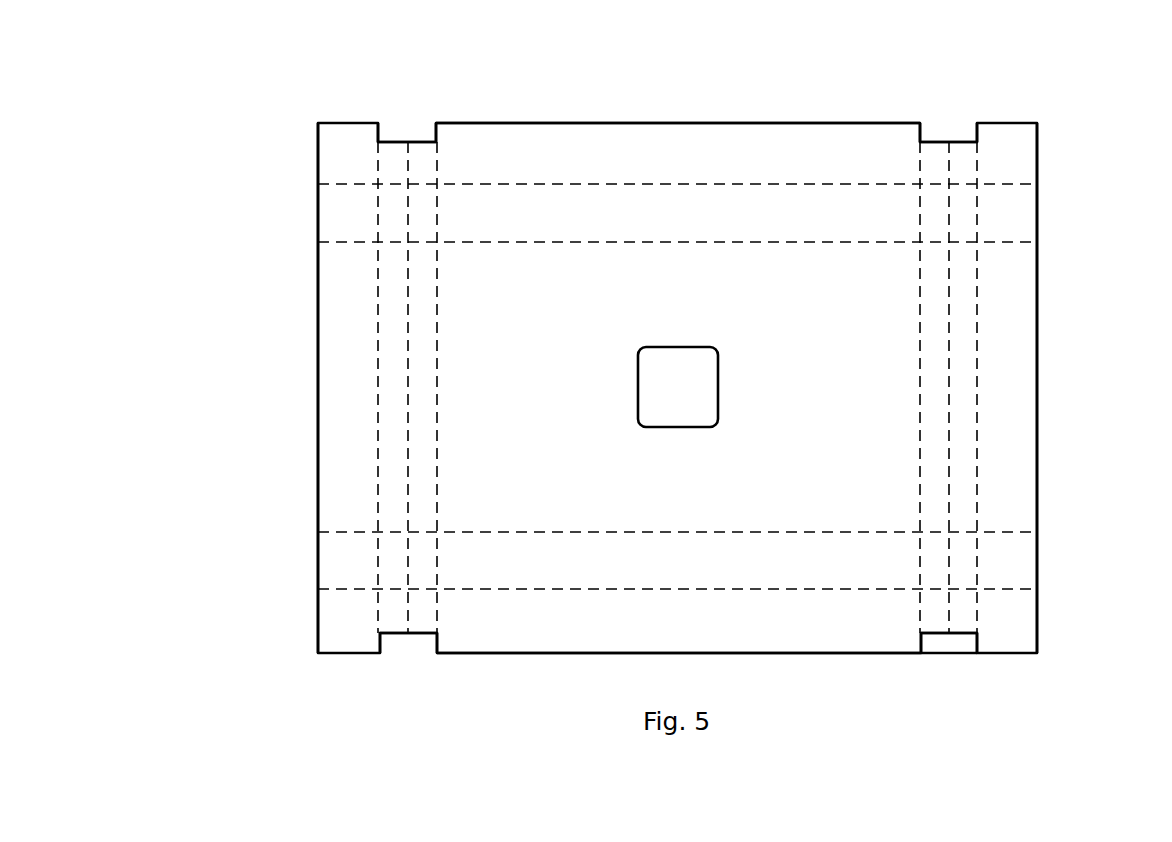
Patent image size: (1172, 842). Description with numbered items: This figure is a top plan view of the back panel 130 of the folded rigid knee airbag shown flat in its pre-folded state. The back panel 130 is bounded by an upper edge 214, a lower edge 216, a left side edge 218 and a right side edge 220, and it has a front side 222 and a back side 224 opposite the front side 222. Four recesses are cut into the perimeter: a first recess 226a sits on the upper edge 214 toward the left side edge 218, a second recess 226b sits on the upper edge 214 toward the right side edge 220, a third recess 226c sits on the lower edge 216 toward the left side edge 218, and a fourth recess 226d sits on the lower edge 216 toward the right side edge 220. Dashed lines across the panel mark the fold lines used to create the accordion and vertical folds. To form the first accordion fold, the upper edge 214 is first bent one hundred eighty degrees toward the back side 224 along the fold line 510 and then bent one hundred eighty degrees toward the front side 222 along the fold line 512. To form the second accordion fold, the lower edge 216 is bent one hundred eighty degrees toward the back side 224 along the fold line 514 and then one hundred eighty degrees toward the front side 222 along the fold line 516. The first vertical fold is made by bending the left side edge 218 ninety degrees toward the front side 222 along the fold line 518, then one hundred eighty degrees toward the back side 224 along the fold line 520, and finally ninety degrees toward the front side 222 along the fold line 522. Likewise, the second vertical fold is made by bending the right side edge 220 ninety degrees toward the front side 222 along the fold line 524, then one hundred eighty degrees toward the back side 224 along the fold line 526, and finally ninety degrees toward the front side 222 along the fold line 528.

The back panel 130 is at (1068, 167).
The upper edge 214 is at (731, 124).
The lower edge 216 is at (790, 655).
The left side edge 218 is at (318, 434).
The right side edge 220 is at (1037, 373).
The front side 222 is at (337, 292).
The back side 224 is at (309, 188).
The first recess 226a is at (407, 143).
The second recess 226b is at (945, 143).
The third recess 226c is at (400, 636).
The fourth recess 226d is at (957, 636).
The fold line 510 is at (736, 242).
The fold line 512 is at (739, 184).
The fold line 514 is at (740, 532).
The fold line 516 is at (743, 589).
The fold line 518 is at (437, 402).
The fold line 520 is at (408, 347).
The fold line 522 is at (380, 386).
The fold line 524 is at (919, 329).
The fold line 526 is at (949, 368).
The fold line 528 is at (978, 328).